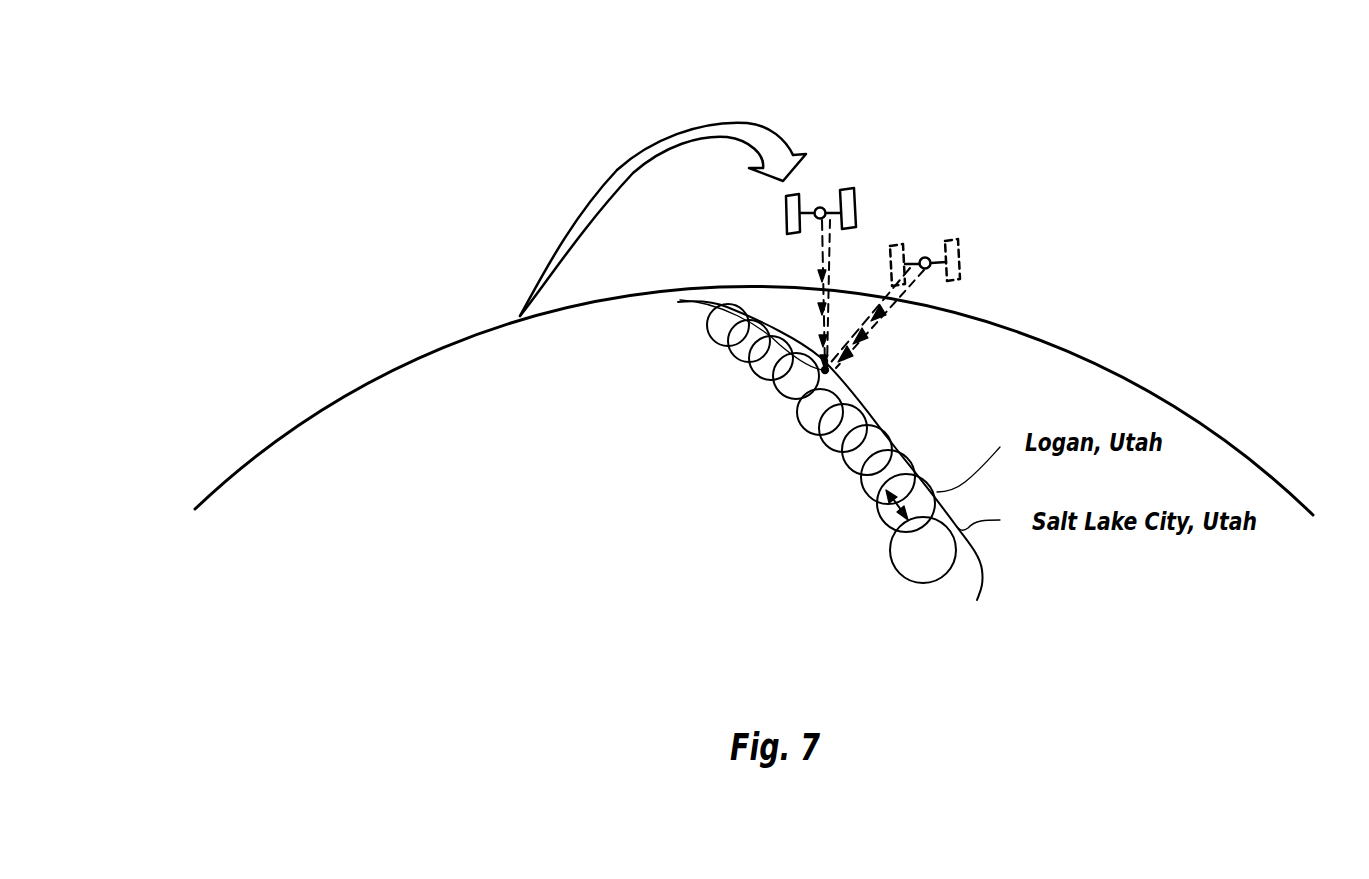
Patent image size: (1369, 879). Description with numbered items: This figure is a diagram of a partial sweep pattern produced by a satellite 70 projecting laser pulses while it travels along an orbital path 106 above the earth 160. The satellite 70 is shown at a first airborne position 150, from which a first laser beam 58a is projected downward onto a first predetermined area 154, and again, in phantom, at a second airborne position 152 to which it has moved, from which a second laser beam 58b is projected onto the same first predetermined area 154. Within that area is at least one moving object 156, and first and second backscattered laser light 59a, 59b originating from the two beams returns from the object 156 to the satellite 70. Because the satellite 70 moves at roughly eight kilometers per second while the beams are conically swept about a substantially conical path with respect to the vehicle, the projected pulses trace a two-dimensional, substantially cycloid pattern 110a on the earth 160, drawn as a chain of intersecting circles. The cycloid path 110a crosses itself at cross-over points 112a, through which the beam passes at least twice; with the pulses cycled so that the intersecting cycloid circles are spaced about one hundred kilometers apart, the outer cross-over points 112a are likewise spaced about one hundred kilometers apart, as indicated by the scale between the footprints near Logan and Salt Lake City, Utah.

The orbital path 106 is at (717, 130).
The first airborne position 150 is at (845, 159).
The second airborne position 152 is at (924, 262).
The satellite 70 is at (855, 194).
The first laser beam 58a is at (822, 281).
The first backscattered laser light 59a is at (830, 260).
The second laser beam 58b is at (866, 335).
The second backscattered laser light 59b is at (878, 316).
The object 156 is at (827, 371).
The earth 160 is at (1130, 381).
The cycloid path 110a is at (706, 327).
The first predetermined area 154 is at (823, 372).
The cross-over points 112a is at (818, 440).